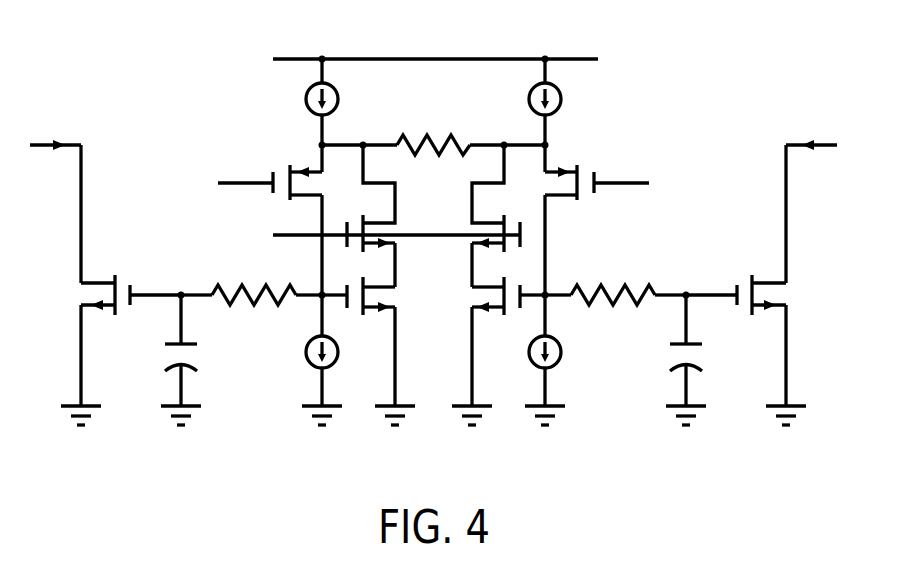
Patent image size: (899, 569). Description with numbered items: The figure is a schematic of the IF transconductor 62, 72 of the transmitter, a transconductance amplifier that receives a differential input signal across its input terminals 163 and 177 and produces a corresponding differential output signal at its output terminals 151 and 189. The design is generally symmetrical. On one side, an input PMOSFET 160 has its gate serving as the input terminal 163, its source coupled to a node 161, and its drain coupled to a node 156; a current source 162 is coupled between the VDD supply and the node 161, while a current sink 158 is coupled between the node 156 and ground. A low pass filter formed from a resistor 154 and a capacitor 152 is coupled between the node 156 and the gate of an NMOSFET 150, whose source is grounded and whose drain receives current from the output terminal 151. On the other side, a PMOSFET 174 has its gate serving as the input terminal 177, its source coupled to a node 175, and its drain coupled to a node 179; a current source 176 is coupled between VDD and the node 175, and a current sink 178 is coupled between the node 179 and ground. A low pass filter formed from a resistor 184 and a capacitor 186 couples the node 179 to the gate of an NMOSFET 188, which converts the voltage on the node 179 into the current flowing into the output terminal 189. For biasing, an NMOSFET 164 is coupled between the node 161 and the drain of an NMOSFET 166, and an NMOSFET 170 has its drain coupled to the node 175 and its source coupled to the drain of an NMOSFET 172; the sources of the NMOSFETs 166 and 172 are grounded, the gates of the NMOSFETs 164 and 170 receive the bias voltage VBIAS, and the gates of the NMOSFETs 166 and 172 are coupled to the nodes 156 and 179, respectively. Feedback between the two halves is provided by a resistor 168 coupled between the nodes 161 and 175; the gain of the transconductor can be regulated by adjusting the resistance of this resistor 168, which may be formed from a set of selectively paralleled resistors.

The IF transconductor 62 is at (707, 45).
The IF transconductor 72 is at (435, 229).
The NMOSFET 150 is at (97, 283).
The output terminal 151 is at (55, 145).
The capacitor 152 is at (173, 347).
The resistor 154 is at (248, 305).
The node 156 is at (318, 298).
The current sink 158 is at (334, 364).
The input PMOSFET 160 is at (320, 168).
The node 161 is at (321, 142).
The current source 162 is at (332, 85).
The input terminal 163 is at (248, 185).
The NMOSFET 164 is at (364, 248).
The NMOSFET 166 is at (370, 305).
The resistor 168 is at (440, 133).
The NMOSFET 170 is at (503, 248).
The NMOSFET 172 is at (497, 305).
The PMOSFET 174 is at (547, 168).
The node 175 is at (546, 142).
The current source 176 is at (535, 85).
The input terminal 177 is at (619, 185).
The current sink 178 is at (533, 364).
The node 179 is at (549, 298).
The resistor 184 is at (619, 305).
The capacitor 186 is at (694, 347).
The NMOSFET 188 is at (770, 283).
The output terminal 189 is at (812, 145).